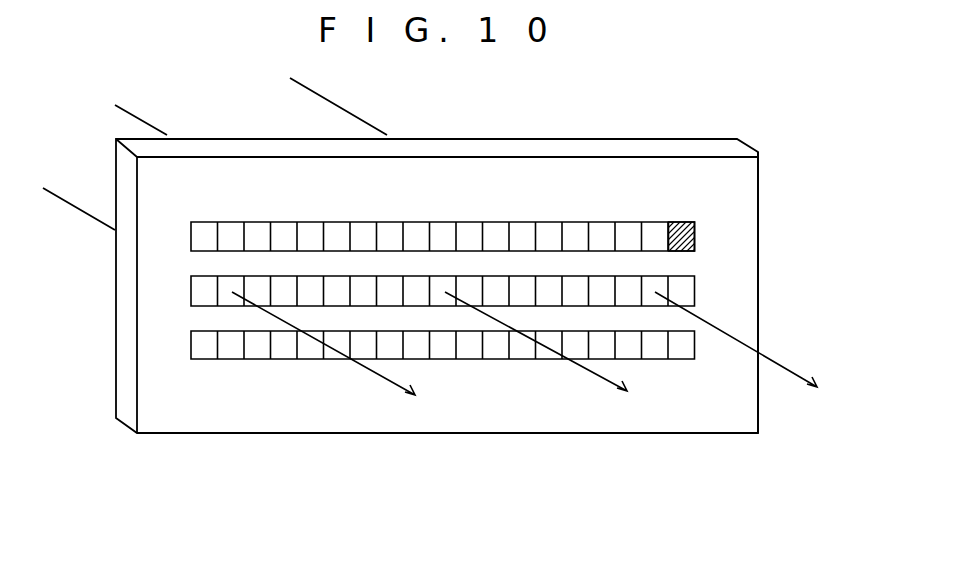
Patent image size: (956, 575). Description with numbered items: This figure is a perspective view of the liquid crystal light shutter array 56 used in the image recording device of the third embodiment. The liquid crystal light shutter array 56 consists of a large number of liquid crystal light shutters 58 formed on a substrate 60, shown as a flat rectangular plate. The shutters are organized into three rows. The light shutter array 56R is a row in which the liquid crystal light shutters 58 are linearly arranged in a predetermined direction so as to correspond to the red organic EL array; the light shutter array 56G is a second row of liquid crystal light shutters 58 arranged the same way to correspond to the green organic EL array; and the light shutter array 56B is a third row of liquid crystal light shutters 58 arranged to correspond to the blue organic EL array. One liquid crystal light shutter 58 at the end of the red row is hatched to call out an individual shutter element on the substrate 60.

The liquid crystal light shutter array 56 is at (746, 118).
The light shutter array 56R is at (418, 236).
The light shutter array 56G is at (418, 291).
The light shutter array 56B is at (418, 345).
The liquid crystal light shutter 58 is at (696, 232).
The substrate 60 is at (750, 194).